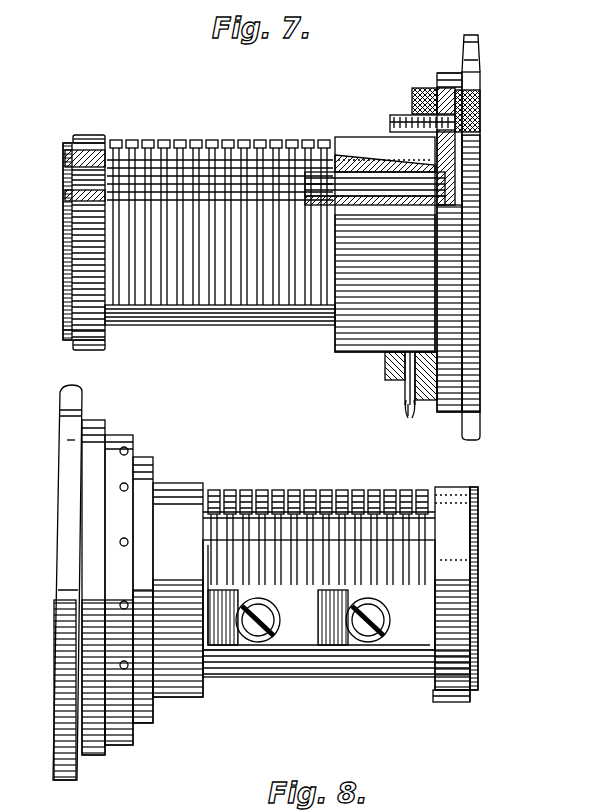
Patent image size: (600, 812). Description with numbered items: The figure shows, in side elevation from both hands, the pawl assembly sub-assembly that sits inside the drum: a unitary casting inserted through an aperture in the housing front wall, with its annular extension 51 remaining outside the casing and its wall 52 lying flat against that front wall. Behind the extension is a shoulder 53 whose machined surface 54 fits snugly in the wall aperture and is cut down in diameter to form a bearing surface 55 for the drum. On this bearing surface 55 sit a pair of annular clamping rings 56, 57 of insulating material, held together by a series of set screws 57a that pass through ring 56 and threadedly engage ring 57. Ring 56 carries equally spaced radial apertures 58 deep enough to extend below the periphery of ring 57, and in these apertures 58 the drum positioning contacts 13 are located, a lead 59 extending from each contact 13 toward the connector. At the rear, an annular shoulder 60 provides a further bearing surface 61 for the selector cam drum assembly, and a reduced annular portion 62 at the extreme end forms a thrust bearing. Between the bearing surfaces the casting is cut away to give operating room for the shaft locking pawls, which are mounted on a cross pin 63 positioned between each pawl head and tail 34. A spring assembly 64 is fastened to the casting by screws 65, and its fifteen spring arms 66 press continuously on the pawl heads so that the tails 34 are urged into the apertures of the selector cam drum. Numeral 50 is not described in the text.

In FIG. 7, the drum positioning contacts 13 is at (405, 406).
In FIG. 8, the drum positioning contacts 13 is at (120, 540).
In FIG. 7, the tail 34 is at (262, 300).
In FIG. 8, the heater assembly 50 is at (66, 430).
In FIG. 7, the annular extension 51 is at (481, 82).
In FIG. 8, the annular extension 51 is at (83, 394).
In FIG. 7, the wall 52 is at (462, 48).
In FIG. 7, the shoulder 53 is at (412, 90).
In FIG. 8, the shoulder 53 is at (102, 420).
In FIG. 7, the surface 54 is at (440, 76).
In FIG. 8, the surface 54 is at (125, 620).
In FIG. 7, the bearing surface 55 is at (368, 142).
In FIG. 8, the bearing surface 55 is at (194, 690).
In FIG. 7, the clamping ring 56 is at (462, 366).
In FIG. 8, the clamping ring 56 is at (158, 483).
In FIG. 7, the clamping ring 57 is at (386, 366).
In FIG. 8, the clamping ring 57 is at (128, 452).
In FIG. 7, the set screws 57a is at (481, 116).
In FIG. 7, the radial apertures 58 is at (408, 390).
In FIG. 7, the lead 59 is at (416, 412).
In FIG. 7, the rearward annular shoulder 60 is at (64, 320).
In FIG. 8, the rearward annular shoulder 60 is at (479, 618).
In FIG. 7, the bearing surface 61 is at (93, 137).
In FIG. 8, the bearing surface 61 is at (446, 700).
In FIG. 7, the reduced annular portion 62 is at (64, 338).
In FIG. 8, the reduced annular portion 62 is at (478, 692).
In FIG. 7, the cross pin 63 is at (446, 192).
In FIG. 8, the cross pin 63 is at (470, 520).
In FIG. 8, the spring assembly 64 is at (312, 630).
In FIG. 8, the screws 65 is at (258, 642).
In FIG. 7, the spring arms 66 is at (262, 142).
In FIG. 8, the spring arms 66 is at (360, 494).